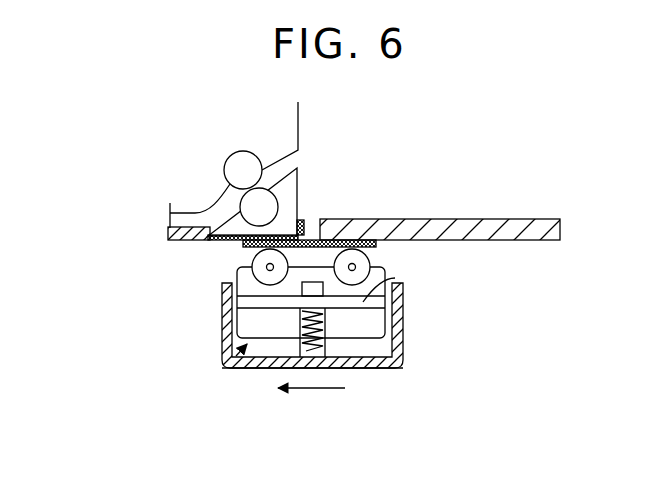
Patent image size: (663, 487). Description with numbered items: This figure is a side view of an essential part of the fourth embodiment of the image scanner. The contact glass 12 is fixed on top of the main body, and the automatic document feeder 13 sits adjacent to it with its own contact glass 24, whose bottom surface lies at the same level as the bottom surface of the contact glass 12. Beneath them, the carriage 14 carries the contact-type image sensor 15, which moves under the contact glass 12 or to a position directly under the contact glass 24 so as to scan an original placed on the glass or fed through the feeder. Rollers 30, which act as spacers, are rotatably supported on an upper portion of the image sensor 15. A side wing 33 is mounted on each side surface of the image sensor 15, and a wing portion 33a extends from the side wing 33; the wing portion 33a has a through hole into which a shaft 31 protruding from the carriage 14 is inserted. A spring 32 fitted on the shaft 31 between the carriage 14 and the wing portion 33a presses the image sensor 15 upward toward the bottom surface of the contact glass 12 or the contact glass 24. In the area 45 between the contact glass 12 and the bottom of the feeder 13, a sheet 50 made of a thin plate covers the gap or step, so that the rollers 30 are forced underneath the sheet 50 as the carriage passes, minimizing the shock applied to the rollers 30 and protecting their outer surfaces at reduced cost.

The contact glass 12 is at (481, 219).
The automatic document feeder 13 is at (219, 132).
The carriage 14 is at (405, 326).
The contact-type image sensor 15 is at (227, 368).
The contact glass of the ADF 24 is at (167, 233).
The rollers 30 is at (252, 260).
The shaft 31 is at (317, 353).
The spring 32 is at (300, 338).
The side wing 33 is at (227, 358).
The wing portion 33a is at (395, 278).
The area 45 is at (313, 232).
The sheet 50 is at (376, 240).